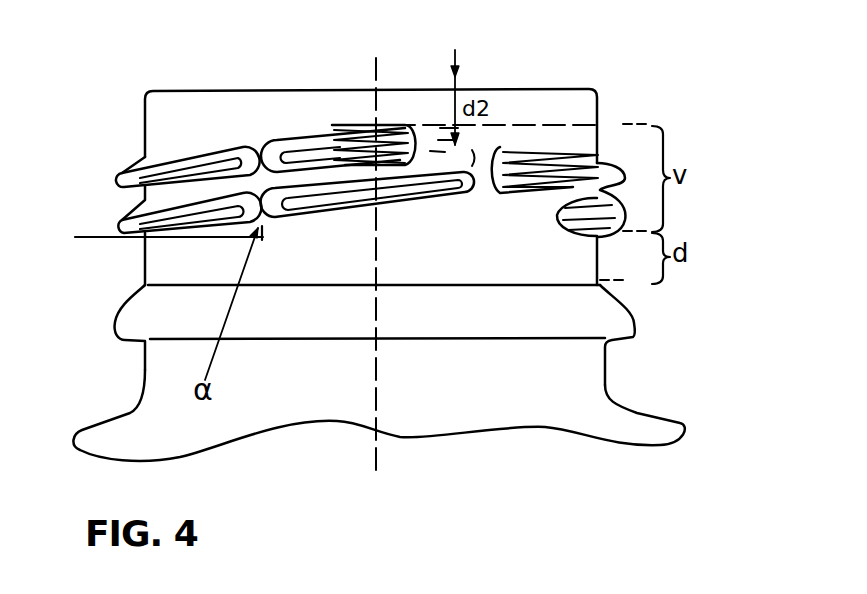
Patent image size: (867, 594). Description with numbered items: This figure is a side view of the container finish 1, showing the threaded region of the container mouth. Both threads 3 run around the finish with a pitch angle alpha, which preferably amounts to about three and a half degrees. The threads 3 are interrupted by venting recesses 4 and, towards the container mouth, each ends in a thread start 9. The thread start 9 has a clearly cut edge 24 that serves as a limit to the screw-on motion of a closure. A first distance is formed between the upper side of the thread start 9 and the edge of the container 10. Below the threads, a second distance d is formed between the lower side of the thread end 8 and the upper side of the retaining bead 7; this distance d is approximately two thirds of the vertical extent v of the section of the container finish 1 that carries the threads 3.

The container finish 1 is at (697, 200).
The threads 3 is at (177, 160).
The venting recesses 4 is at (262, 157).
The retaining bead 7 is at (133, 322).
The thread end 8 is at (157, 237).
The thread start 9 is at (410, 125).
The edge of the container 10 is at (495, 90).
The cut edge 24 is at (418, 147).